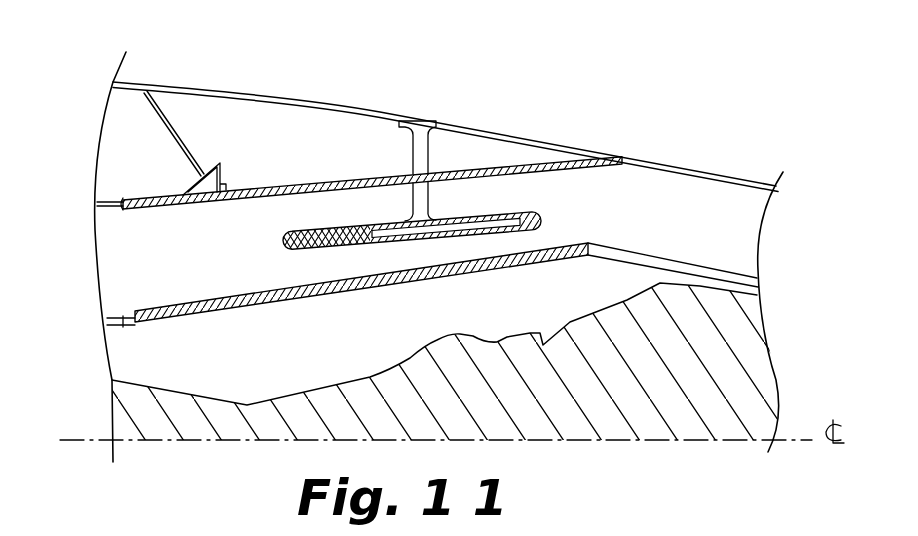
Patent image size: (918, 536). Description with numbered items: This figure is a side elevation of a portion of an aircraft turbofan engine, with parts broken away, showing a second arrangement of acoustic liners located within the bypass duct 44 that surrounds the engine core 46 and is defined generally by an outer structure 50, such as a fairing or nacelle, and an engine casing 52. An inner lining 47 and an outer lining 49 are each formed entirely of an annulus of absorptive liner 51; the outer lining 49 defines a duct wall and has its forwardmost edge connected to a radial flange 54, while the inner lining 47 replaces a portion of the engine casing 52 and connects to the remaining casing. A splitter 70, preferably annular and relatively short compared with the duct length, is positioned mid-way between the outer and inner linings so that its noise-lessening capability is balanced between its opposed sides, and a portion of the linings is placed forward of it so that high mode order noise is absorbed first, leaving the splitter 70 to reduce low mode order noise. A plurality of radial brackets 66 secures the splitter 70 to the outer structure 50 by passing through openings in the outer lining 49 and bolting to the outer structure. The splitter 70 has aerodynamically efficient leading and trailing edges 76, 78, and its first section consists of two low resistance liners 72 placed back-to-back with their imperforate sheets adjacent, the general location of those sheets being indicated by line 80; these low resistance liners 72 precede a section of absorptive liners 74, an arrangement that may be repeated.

The bypass duct 44 is at (124, 254).
The engine core 46 is at (200, 397).
The inner lining 47 is at (160, 302).
The outer lining 49 is at (194, 211).
The outer structure 50 is at (494, 130).
The absorptive liner 51 is at (281, 187).
The engine casing 52 is at (122, 321).
The radial flange 54 is at (223, 187).
The radial brackets 66 is at (424, 126).
The splitter 70 is at (257, 252).
The low resistance liners 72 is at (355, 230).
The absorptive liners 74 is at (517, 213).
The leading edge 76 is at (283, 239).
The trailing edge 78 is at (547, 218).
The line 80 is at (312, 236).